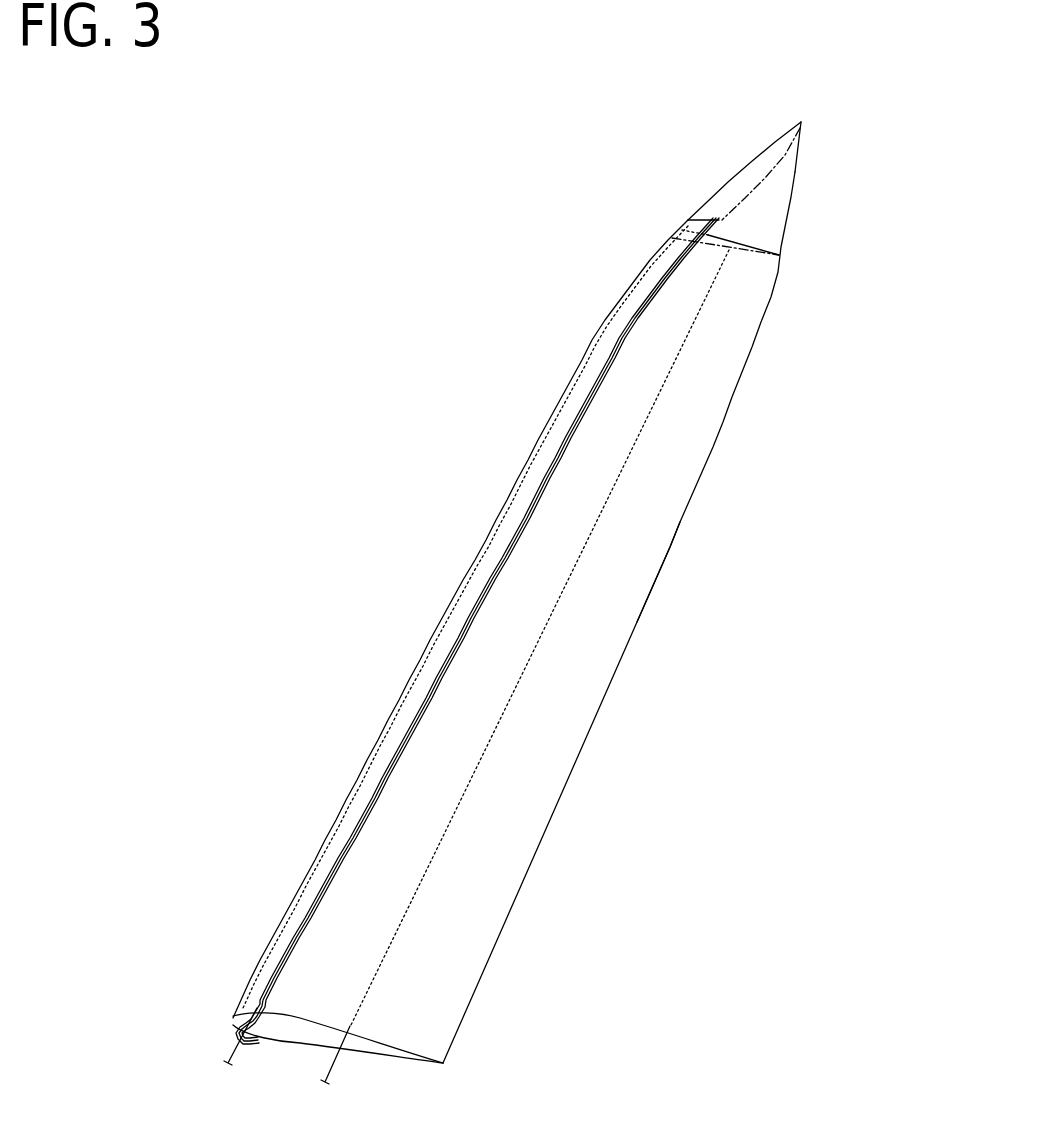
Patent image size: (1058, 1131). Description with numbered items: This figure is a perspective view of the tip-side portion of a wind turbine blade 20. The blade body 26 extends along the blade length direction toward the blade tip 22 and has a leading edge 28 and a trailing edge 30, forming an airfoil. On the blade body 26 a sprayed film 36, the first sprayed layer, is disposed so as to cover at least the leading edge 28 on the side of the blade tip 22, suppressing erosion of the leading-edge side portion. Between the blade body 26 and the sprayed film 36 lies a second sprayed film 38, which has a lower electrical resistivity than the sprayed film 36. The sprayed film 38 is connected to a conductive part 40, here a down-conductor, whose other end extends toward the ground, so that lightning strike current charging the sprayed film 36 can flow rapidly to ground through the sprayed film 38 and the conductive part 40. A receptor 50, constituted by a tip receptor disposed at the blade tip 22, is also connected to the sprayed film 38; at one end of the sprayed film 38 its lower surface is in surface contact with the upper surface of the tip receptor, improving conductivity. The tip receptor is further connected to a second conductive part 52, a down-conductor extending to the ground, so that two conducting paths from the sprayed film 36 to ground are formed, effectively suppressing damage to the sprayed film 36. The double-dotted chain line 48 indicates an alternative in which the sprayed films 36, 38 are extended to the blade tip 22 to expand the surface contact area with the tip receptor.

The wind turbine blade 20 is at (441, 250).
The blade tip 22 is at (803, 122).
The blade body 26 is at (681, 521).
The leading edge 28 is at (422, 654).
The trailing edge 30 is at (588, 731).
The sprayed film 36 is at (563, 420).
The sprayed film 38 is at (547, 475).
The conductive part 40 is at (232, 1047).
The double-dotted chain line 48 is at (774, 171).
The receptor 50 is at (777, 203).
The conductive part 52 is at (476, 770).